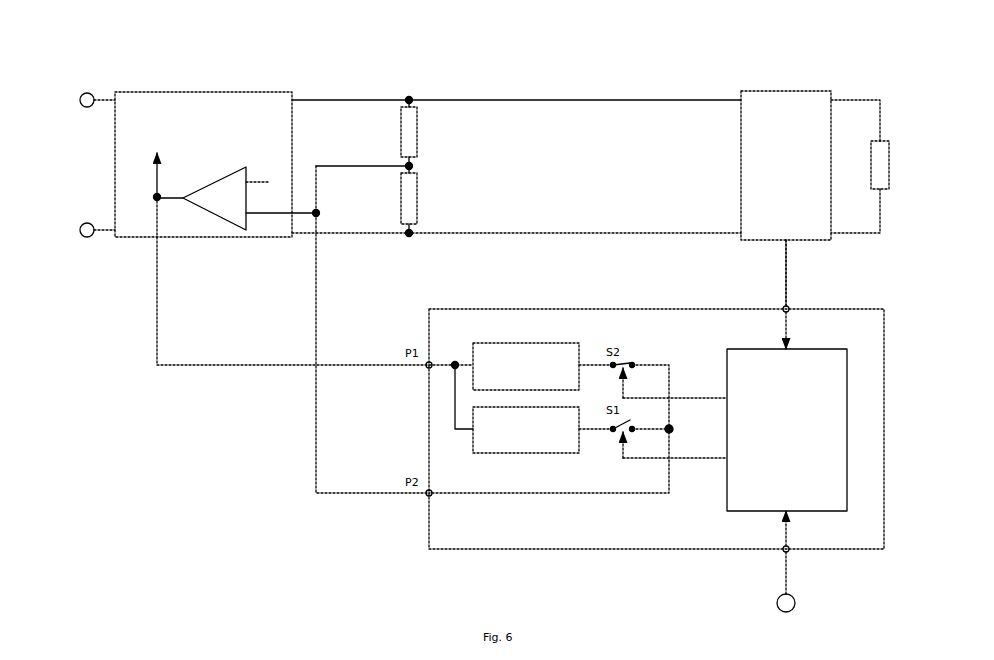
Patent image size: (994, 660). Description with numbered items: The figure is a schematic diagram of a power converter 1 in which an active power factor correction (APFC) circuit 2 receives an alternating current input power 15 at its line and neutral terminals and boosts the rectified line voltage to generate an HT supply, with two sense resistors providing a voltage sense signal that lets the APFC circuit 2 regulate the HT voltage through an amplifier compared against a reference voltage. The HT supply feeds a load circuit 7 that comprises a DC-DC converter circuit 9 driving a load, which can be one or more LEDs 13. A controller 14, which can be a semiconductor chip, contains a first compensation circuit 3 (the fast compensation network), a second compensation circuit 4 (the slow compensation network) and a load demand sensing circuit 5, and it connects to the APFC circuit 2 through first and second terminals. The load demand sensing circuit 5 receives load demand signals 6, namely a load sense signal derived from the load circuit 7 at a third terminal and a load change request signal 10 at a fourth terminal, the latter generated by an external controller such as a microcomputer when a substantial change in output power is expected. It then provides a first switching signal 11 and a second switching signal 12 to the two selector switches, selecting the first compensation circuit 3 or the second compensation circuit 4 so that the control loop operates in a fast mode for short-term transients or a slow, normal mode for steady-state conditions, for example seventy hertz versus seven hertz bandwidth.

The power converter 1 is at (290, 55).
The active power factor correction (APFC) circuit 2 is at (148, 92).
The first compensation circuit 3 is at (470, 340).
The second compensation circuit 4 is at (498, 455).
The load demand sensing circuit 5 is at (850, 382).
The load demand signal 6 is at (790, 277).
The load circuit 7 is at (880, 76).
The DC-DC converter circuit 9 is at (790, 90).
The load change request signal 10 is at (797, 598).
The first switching signal 11 is at (705, 392).
The second switching signal 12 is at (705, 463).
The LEDs 13 is at (898, 140).
The controller 14 is at (428, 551).
The alternating current (AC) input power 15 is at (72, 93).